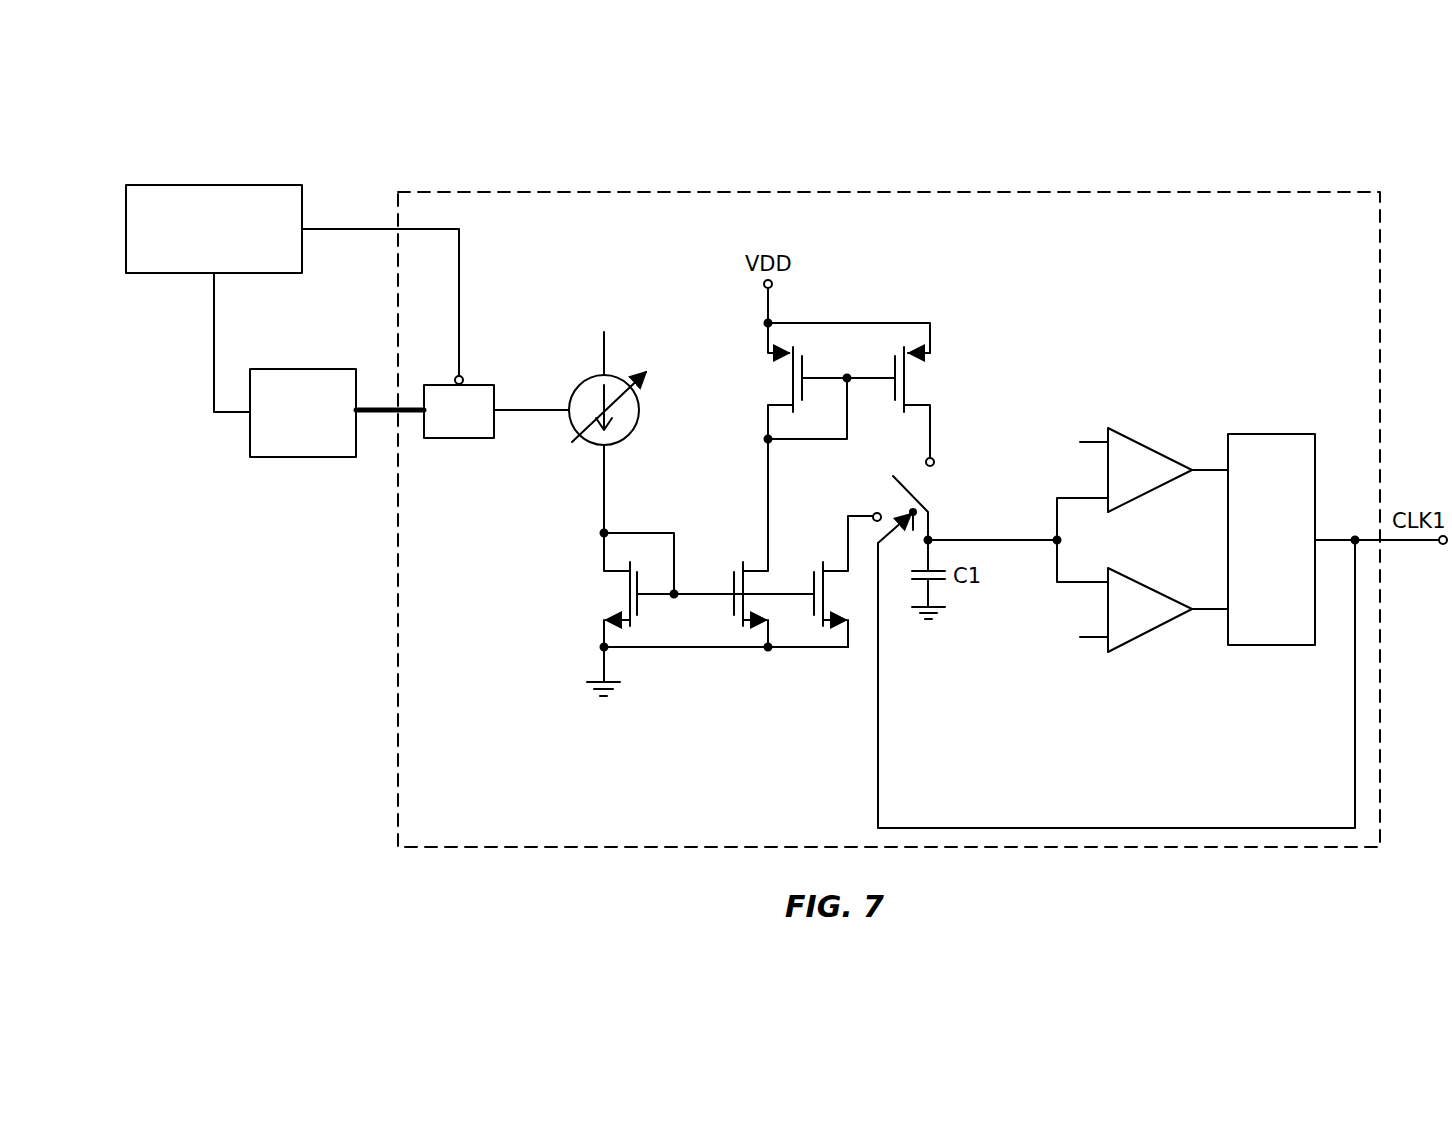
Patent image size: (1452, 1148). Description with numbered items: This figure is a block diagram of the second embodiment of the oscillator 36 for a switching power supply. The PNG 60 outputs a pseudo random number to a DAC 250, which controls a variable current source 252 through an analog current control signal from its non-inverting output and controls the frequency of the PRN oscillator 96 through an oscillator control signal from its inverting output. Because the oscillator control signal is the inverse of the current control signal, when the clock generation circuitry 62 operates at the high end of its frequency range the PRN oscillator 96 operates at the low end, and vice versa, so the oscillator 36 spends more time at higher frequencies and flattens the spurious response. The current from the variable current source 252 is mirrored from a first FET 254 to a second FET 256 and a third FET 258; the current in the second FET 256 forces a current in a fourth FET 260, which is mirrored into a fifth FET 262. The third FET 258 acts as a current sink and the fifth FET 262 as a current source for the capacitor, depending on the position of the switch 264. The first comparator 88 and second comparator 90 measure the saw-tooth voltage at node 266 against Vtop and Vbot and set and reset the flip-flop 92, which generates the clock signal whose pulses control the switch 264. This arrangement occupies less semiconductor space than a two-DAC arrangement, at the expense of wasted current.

The oscillator 36 is at (889, 466).
The clock generation circuitry 62 is at (1274, 192).
The PRN oscillator 96 is at (262, 185).
The PNG 60 is at (329, 369).
The DAC 250 is at (480, 385).
The variable current source 252 is at (612, 372).
The first Field Effect Transistor 254 is at (608, 590).
The second FET 256 is at (758, 562).
The third FET 258 is at (841, 562).
The fourth FET 260 is at (804, 374).
The fifth FET 262 is at (910, 379).
The switch 264 is at (932, 490).
The node 266 is at (930, 538).
The first comparator 88 is at (1142, 446).
The second comparator 90 is at (1142, 587).
The flip-flop 92 is at (1259, 549).